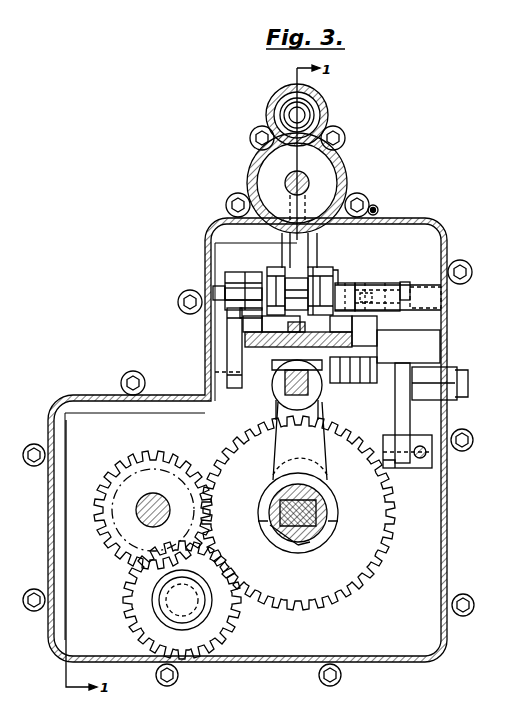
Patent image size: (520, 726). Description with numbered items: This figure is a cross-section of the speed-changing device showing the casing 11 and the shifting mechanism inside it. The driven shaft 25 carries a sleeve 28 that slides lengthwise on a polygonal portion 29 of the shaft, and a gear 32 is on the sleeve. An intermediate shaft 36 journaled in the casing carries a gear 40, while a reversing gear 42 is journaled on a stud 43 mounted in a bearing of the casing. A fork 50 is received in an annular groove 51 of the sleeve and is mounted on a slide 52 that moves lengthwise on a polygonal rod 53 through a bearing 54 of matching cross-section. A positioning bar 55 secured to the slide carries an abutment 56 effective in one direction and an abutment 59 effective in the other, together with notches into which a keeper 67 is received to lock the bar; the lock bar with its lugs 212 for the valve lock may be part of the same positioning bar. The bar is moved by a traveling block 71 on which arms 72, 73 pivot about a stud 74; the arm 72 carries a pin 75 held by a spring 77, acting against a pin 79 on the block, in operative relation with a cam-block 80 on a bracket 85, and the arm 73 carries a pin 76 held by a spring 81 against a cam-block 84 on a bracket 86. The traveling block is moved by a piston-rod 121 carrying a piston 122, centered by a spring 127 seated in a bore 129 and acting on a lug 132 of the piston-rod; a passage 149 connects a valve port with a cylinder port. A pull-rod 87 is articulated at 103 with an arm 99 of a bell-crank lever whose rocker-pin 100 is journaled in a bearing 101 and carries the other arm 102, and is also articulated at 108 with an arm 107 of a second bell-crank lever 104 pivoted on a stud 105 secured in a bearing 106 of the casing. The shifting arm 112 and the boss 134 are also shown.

The casing 11 is at (197, 257).
The driven shaft 25 is at (320, 524).
The sleeve 28 is at (310, 544).
The polygonal portion of driven shaft 29 is at (285, 530).
The gear 32 is at (358, 572).
The intermediate shaft 36 is at (143, 512).
The gear 40 is at (112, 473).
The reversing gear 42 is at (140, 618).
The stud 43 is at (182, 600).
The fork 50 is at (338, 501).
The annular groove 51 is at (327, 518).
The slide 52 is at (270, 408).
The rod 53 is at (284, 398).
The bearing 54 is at (272, 378).
The positioning bar 55 is at (262, 352).
The abutment 56 is at (252, 324).
The abutment 59 is at (341, 324).
The keeper 67 is at (340, 354).
The traveling block 71 is at (326, 270).
The arm 72 is at (270, 278).
The arm 73 is at (352, 283).
The stud 74 is at (380, 290).
The pin 75 is at (232, 297).
The pin 76 is at (366, 303).
The spring 77 is at (254, 290).
The pin 79 is at (292, 268).
The cam-block 80 is at (252, 311).
The spring 81 is at (365, 294).
The cam-block 84 is at (406, 283).
The bracket 85 is at (220, 288).
The bracket 86 is at (426, 300).
The pull-rod 87 is at (428, 452).
The arm 99 is at (408, 346).
The rocker-pin 100 is at (440, 286).
The bearing 101 is at (338, 272).
The arm 102 is at (230, 374).
The articulation 103 is at (364, 331).
The bell-crank lever 104 is at (395, 400).
The stud 105 is at (340, 385).
The bearing 106 is at (433, 375).
The arm 107 is at (398, 440).
The articulation 108 is at (392, 460).
The arm 112 is at (300, 441).
The piston-rod 121 is at (312, 178).
The piston 122 is at (258, 170).
The spring 127 is at (313, 113).
The bore 129 is at (266, 118).
The lug 132 is at (272, 104).
The boss 134 is at (323, 100).
The passage 149 is at (378, 208).
The lug 212 is at (298, 331).